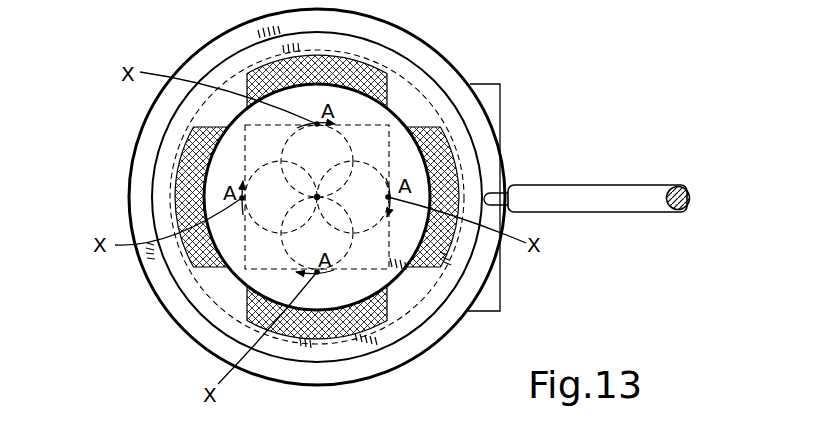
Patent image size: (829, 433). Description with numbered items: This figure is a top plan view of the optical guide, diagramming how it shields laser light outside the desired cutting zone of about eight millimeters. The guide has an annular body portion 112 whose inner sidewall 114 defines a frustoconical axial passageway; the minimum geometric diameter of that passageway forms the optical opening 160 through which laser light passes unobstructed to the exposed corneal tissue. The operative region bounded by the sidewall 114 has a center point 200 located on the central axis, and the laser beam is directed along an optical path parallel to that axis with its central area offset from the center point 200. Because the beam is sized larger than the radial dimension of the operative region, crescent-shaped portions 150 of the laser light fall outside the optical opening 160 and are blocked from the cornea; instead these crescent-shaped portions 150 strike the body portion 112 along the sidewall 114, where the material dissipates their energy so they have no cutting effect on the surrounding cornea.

The body portion 112 is at (478, 135).
The inner sidewall 114 is at (403, 108).
The crescent-shaped portions 150 is at (360, 63).
The optical opening 160 is at (350, 293).
The center point 200 is at (317, 197).